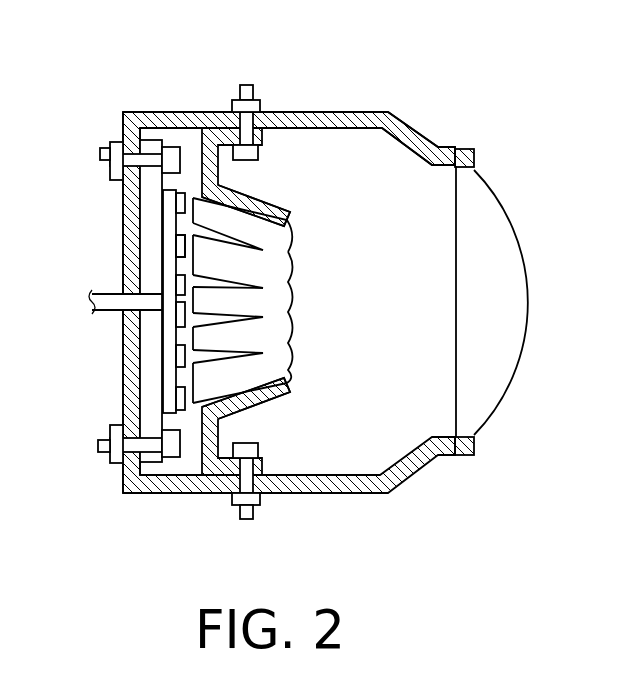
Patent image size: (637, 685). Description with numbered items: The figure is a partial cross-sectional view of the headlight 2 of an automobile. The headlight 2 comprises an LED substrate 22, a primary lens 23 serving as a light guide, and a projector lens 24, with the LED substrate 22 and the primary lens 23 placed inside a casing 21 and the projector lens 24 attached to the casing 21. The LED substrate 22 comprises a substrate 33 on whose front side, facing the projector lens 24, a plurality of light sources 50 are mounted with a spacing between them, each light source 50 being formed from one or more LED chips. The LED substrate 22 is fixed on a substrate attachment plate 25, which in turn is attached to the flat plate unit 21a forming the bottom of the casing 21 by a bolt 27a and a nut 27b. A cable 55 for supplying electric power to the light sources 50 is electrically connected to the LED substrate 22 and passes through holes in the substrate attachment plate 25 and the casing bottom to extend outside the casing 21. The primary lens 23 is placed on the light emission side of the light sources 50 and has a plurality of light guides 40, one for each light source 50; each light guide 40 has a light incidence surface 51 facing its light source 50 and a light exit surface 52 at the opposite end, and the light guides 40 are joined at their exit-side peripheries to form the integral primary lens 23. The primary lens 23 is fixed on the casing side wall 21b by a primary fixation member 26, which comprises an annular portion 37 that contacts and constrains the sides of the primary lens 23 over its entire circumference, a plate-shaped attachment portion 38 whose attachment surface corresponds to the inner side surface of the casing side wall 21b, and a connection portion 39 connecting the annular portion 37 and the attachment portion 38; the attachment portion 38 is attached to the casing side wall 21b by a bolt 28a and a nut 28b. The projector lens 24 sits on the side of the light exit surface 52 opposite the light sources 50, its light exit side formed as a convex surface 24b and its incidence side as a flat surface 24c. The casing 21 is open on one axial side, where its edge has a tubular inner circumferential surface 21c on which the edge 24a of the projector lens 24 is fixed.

The headlight 2 is at (315, 301).
The casing 21 is at (340, 493).
The flat plate unit 21a is at (124, 340).
The casing side wall 21b is at (205, 113).
The tubular inner circumferential surface 21c is at (466, 170).
The LED substrate 22 is at (176, 413).
The primary lens 23 is at (291, 300).
The projector lens 24 is at (491, 266).
The edge 24a is at (472, 150).
The convex surface 24b is at (510, 387).
The flat surface 24c is at (452, 378).
The substrate attachment plate 25 is at (150, 268).
The primary fixation member 26 is at (289, 301).
The bolt 27a is at (165, 140).
The nut 27b is at (112, 143).
The bolt 28a is at (256, 446).
The nut 28b is at (240, 507).
The substrate 33 is at (173, 355).
The annular portion 37 is at (291, 394).
The attachment portion 38 is at (282, 113).
The connection portion 39 is at (212, 170).
The light guide 40 is at (291, 232).
The light source 50 is at (177, 205).
The light incidence surface 51 is at (174, 254).
The light exit surface 52 is at (297, 300).
The cable 55 is at (110, 312).